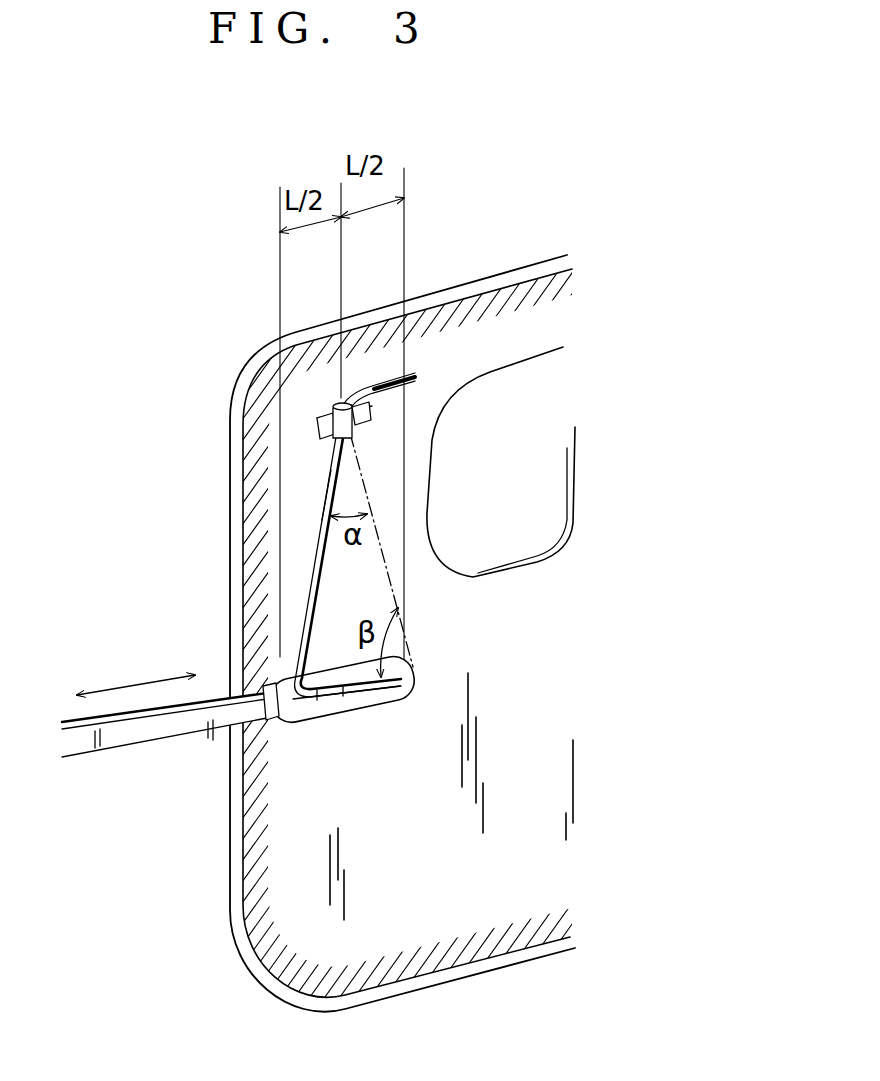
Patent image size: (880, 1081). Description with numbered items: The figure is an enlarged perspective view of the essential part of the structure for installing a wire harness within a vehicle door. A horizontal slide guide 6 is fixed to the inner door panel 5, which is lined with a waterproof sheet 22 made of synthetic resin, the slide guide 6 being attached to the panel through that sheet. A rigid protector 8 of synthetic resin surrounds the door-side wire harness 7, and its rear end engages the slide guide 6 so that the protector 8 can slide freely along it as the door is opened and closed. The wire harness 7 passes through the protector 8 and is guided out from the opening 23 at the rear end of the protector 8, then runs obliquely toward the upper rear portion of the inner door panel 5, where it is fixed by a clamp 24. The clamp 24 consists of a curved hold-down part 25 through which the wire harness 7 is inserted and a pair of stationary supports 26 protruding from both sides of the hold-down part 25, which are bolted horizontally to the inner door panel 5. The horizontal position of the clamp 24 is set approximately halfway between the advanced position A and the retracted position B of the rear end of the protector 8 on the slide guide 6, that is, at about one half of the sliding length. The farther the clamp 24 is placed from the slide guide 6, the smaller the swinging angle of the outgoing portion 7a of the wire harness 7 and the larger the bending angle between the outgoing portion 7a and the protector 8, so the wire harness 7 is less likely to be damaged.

The inner door panel 5 is at (423, 897).
The slide guide 6 is at (380, 700).
The door-side wire harness 7 is at (326, 473).
The outgoing portion 7a is at (321, 543).
The protector 8 is at (165, 728).
The waterproof sheet 22 is at (377, 975).
The opening 23 is at (291, 707).
The clamp 24 is at (352, 430).
The hold-down part 25 is at (338, 417).
The stationary supports 26 is at (370, 408).
The advanced position A is at (279, 672).
The retracted position B is at (410, 650).